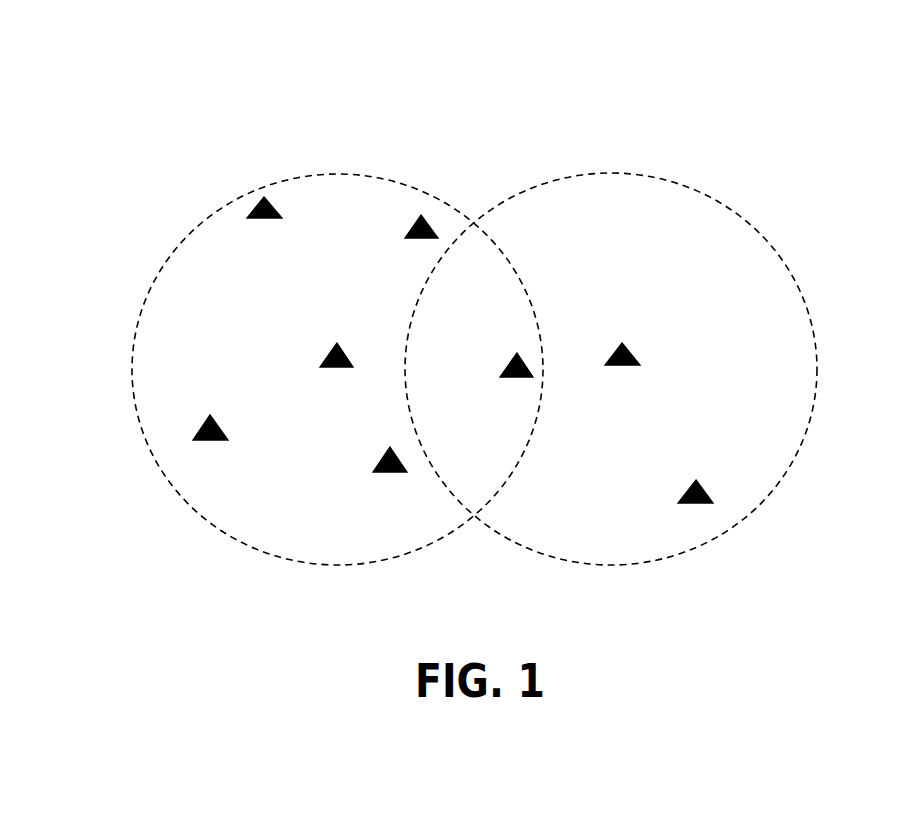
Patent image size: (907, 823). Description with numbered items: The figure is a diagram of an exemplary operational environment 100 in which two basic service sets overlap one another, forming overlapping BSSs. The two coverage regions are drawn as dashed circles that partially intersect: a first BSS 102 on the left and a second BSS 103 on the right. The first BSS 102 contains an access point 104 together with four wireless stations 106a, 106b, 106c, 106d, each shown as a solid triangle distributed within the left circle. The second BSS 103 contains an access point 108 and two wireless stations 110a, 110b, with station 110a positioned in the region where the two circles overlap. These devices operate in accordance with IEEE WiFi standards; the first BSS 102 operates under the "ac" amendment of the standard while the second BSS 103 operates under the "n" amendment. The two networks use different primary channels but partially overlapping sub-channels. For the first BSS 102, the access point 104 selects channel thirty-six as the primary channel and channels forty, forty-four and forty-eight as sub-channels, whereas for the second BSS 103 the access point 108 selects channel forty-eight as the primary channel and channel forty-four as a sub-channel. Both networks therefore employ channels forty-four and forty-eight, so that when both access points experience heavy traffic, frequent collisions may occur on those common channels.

The operational environment 100 is at (868, 36).
The first BSS 102 is at (176, 249).
The second BSS 103 is at (734, 212).
The access point 104 is at (344, 351).
The wireless station 106a is at (220, 428).
The wireless station 106b is at (383, 460).
The wireless station 106c is at (275, 214).
The wireless station 106d is at (412, 228).
The access point 108 is at (638, 357).
The wireless station 110a is at (511, 361).
The wireless station 110b is at (690, 487).